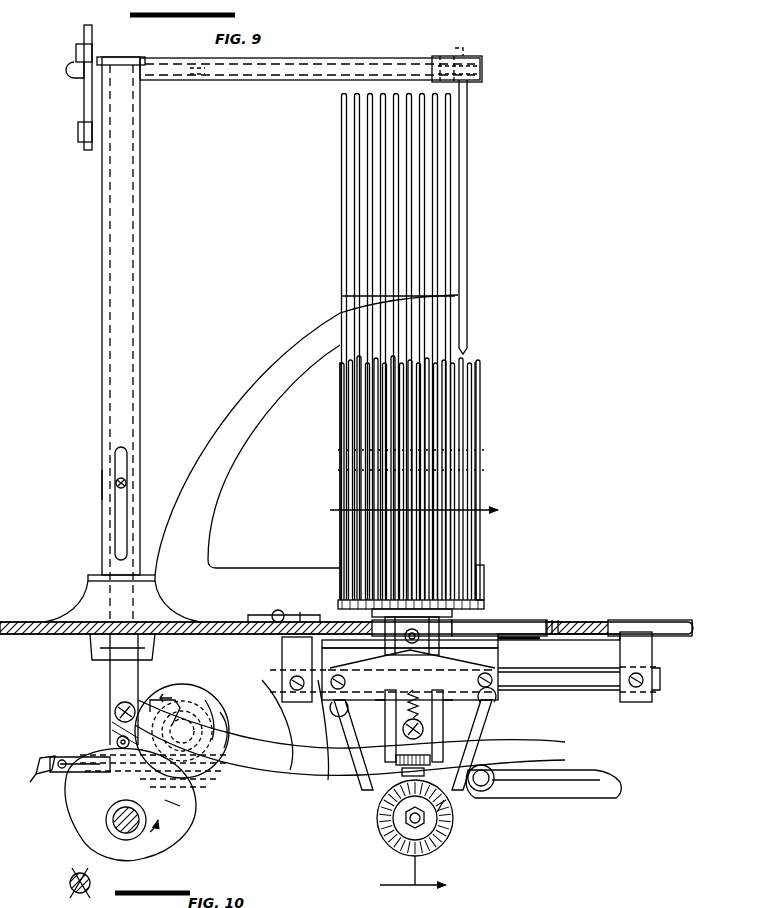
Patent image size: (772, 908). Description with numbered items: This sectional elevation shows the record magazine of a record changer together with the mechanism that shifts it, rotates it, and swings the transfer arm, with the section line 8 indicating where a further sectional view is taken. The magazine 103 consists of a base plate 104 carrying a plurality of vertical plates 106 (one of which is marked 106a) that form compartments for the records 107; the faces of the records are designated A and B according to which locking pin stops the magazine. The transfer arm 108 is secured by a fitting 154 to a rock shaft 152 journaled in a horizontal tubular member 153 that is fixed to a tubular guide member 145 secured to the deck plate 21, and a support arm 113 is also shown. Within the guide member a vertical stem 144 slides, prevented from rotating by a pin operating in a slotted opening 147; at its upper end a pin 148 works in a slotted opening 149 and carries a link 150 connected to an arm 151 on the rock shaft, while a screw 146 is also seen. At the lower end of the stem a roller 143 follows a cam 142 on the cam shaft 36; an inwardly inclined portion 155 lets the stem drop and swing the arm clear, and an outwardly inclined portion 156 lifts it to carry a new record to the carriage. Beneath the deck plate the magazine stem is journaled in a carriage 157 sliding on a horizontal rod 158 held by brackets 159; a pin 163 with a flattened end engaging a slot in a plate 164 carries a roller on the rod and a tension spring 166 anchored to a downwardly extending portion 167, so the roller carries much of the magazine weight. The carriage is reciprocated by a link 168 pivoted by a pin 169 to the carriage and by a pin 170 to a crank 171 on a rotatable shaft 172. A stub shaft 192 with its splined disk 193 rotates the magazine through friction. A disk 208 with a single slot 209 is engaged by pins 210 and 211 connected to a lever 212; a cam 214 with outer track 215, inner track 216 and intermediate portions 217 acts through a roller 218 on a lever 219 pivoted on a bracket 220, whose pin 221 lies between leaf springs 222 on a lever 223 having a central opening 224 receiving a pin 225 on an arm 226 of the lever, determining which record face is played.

The deck plate 21 is at (585, 620).
The cam shaft 36 is at (118, 826).
The magazine 103 is at (440, 500).
The base plate 104 is at (487, 609).
The vertical plates 106 is at (476, 372).
The tube 106a is at (350, 380).
The records 107 is at (342, 206).
The transfer arm 108 is at (467, 308).
The support arm 113 is at (240, 396).
The cam 142 is at (180, 808).
The roller 143 is at (117, 740).
The vertical stem 144 is at (110, 671).
The tubular guide member 145 is at (102, 484).
The screw 146 is at (118, 492).
The slotted opening 147 is at (120, 530).
The pin 148 is at (80, 140).
The slotted opening 149 is at (100, 178).
The link 150 is at (86, 104).
The arm 151 is at (93, 46).
The rock shaft 152 is at (224, 82).
The horizontal tubular member 153 is at (268, 82).
The fitting 154 is at (474, 82).
The inwardly inclined portion 155 is at (76, 806).
The outwardly inclined portion 156 is at (180, 828).
The carriage 157 is at (444, 702).
The horizontal rod 158 is at (590, 690).
The brackets 159 is at (650, 660).
The pin 163 is at (413, 655).
The plate 164 is at (462, 648).
The tension spring 166 is at (406, 712).
The downwardly extending portion 167 is at (451, 815).
The link 168 is at (328, 780).
The pin 169 is at (424, 729).
The pin 170 is at (114, 702).
The crank 171 is at (176, 688).
The rotatable shaft 172 is at (214, 722).
The stub shaft 192 is at (393, 824).
The disk 193 is at (441, 840).
The disk 208 is at (516, 634).
The slot 209 is at (318, 605).
The pin 210 is at (300, 620).
The pin 211 is at (498, 652).
The lever 212 is at (482, 756).
The cam 214 is at (190, 690).
The outer track 215 is at (154, 690).
The inner track 216 is at (218, 736).
The intermediate portions 217 is at (198, 706).
The roller 218 is at (226, 786).
The lever 219 is at (70, 758).
The bracket 220 is at (290, 772).
The pin 221 is at (58, 760).
The leaf springs 222 is at (50, 768).
The lever 223 is at (361, 782).
The central opening 224 is at (578, 800).
The pin 225 is at (492, 792).
The arm 226 is at (466, 790).
The section line 8- 8 is at (402, 702).
The record faces A is at (438, 280).
The record faces B is at (352, 284).